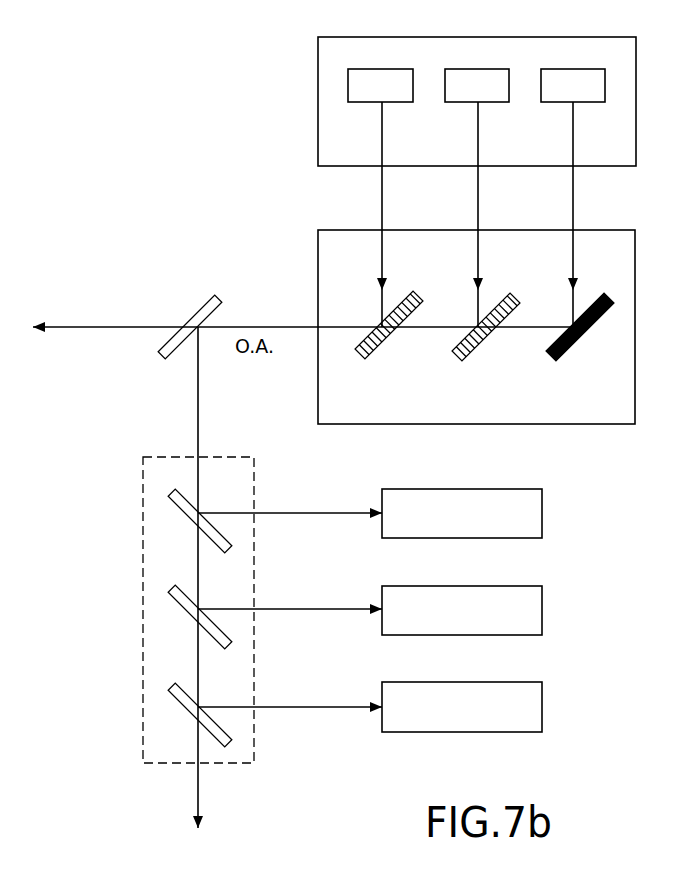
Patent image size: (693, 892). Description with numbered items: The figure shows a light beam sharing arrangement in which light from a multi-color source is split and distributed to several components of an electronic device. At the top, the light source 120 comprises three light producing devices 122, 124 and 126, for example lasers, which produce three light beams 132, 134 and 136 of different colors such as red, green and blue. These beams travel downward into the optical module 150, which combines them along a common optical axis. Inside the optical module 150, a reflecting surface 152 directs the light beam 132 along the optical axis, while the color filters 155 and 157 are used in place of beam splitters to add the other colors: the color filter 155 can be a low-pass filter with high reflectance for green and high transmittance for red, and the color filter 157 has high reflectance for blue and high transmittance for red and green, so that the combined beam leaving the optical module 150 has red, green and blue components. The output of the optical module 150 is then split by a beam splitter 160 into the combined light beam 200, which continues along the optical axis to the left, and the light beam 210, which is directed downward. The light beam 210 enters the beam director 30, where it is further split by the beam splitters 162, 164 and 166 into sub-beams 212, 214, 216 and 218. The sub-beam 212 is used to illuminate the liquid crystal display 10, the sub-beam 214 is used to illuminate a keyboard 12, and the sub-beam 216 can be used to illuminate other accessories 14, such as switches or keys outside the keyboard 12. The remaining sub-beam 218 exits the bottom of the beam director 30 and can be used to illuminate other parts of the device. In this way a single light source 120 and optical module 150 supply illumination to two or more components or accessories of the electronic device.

The liquid crystal display 10 is at (543, 515).
The keyboard 12 is at (543, 613).
The other accessories 14 is at (543, 710).
The beam director 30 is at (142, 530).
The light source 120 is at (318, 130).
The light producing device 122 is at (577, 103).
The light producing device 124 is at (480, 103).
The light producing device 126 is at (388, 103).
The light beam 132 is at (572, 220).
The light beam 134 is at (477, 220).
The light beam 136 is at (381, 220).
The optical module 150 is at (318, 260).
The reflecting surface 152 is at (590, 300).
The color filter 155 is at (496, 300).
The color filter 157 is at (400, 300).
The beam splitter 160 is at (190, 320).
The beam splitter 162 is at (177, 505).
The beam splitter 164 is at (177, 601).
The beam splitter 166 is at (177, 697).
The combined light beam 200 is at (140, 323).
The light beam 210 is at (197, 418).
The sub-beam 212 is at (275, 510).
The sub-beam 214 is at (275, 606).
The sub-beam 216 is at (275, 704).
The sub-beam 218 is at (195, 780).